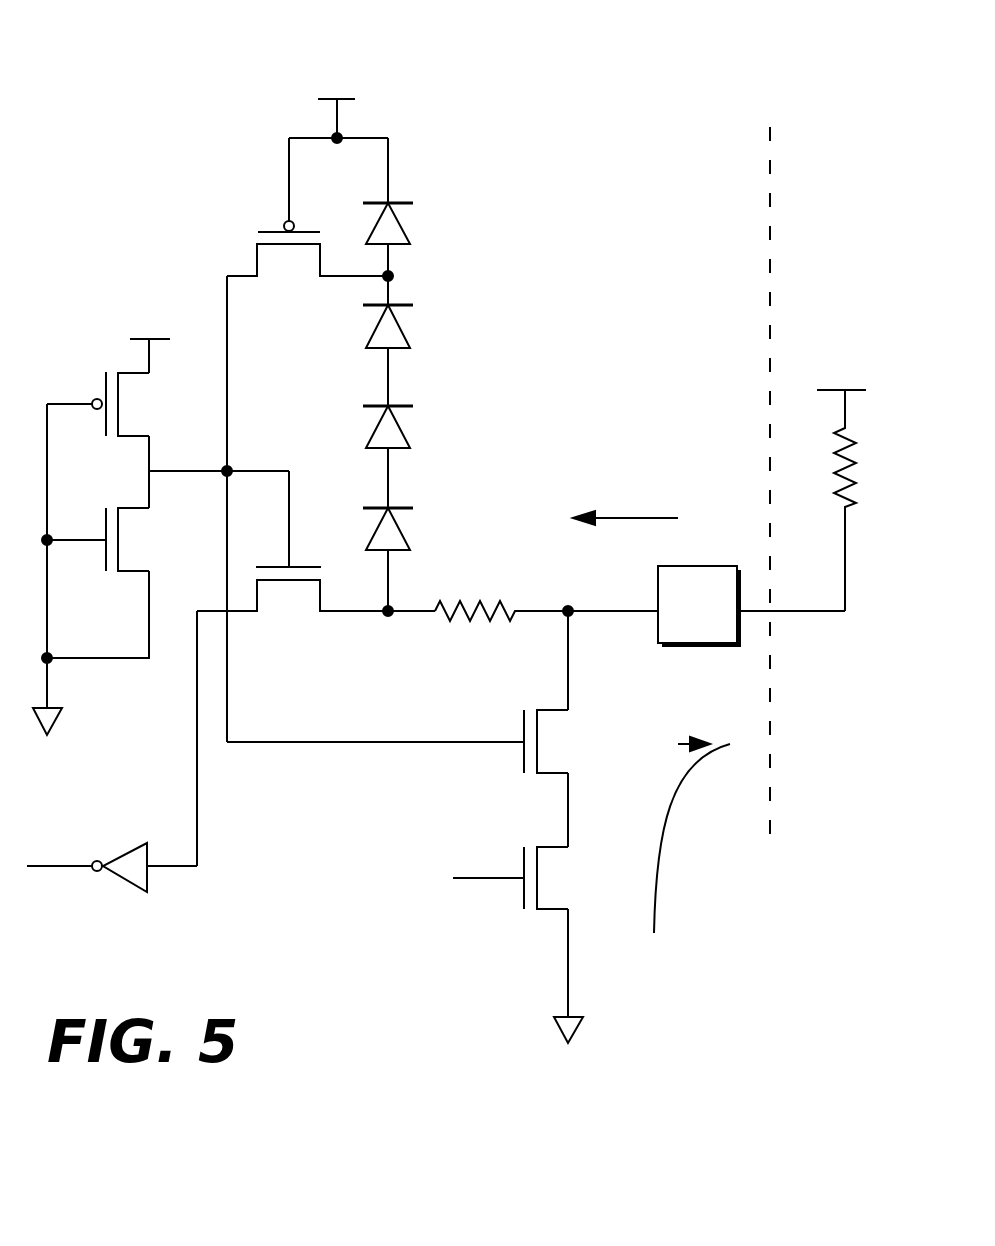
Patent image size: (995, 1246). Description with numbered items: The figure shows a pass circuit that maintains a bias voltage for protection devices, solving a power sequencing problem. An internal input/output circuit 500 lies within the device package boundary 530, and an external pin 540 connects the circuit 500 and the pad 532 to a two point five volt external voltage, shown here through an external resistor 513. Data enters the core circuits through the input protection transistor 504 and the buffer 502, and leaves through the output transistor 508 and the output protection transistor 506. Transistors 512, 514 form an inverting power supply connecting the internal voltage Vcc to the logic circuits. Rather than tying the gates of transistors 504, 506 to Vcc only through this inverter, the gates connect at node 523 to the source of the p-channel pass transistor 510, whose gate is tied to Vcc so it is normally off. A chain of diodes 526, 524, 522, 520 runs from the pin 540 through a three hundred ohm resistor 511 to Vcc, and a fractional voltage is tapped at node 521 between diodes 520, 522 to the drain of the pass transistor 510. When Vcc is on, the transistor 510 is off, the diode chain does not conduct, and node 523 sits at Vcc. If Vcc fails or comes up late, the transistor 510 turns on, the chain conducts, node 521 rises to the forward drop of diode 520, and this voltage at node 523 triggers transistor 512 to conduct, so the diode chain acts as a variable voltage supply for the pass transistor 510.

The internal input/output circuit 500 is at (111, 35).
The buffer 502 is at (112, 882).
The input protection transistor 504 is at (316, 624).
The output protection transistor 506 is at (416, 734).
The output transistor 508 is at (508, 878).
The p-channel pass transistor 510 is at (307, 241).
The resistor 511 is at (501, 623).
The p-channel transistor 512 is at (117, 404).
The external resistor 513 is at (821, 500).
The transistor 514 is at (115, 539).
The diode 520 is at (410, 223).
The node 521 is at (413, 276).
The diode 522 is at (411, 326).
The node 523 is at (219, 459).
The diode 524 is at (411, 427).
The diode 526 is at (413, 529).
The device package boundary 530 is at (762, 463).
The pad 532 is at (699, 606).
The external pin 540 is at (791, 638).